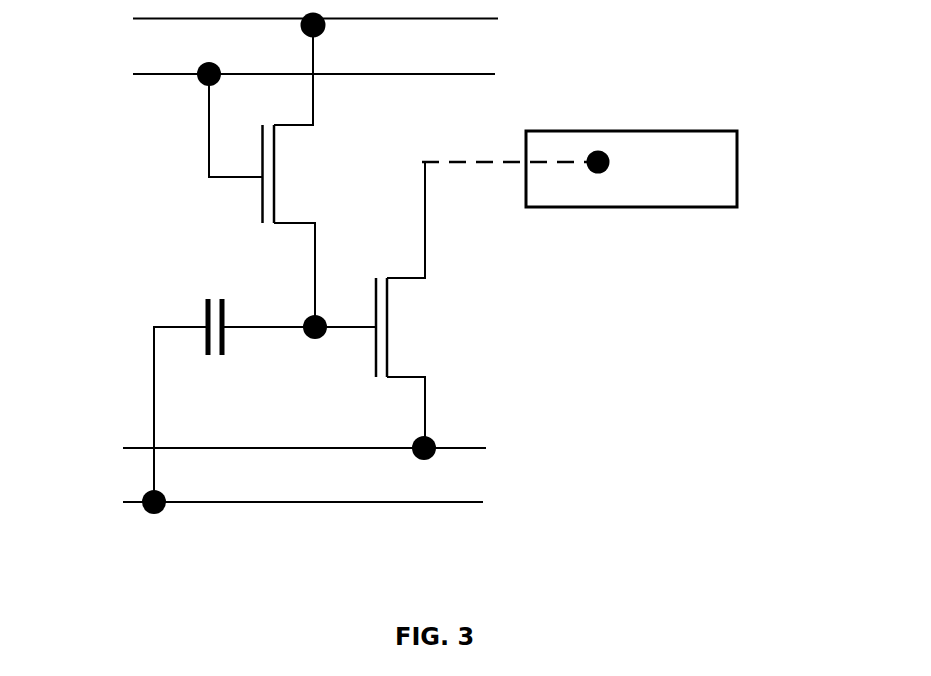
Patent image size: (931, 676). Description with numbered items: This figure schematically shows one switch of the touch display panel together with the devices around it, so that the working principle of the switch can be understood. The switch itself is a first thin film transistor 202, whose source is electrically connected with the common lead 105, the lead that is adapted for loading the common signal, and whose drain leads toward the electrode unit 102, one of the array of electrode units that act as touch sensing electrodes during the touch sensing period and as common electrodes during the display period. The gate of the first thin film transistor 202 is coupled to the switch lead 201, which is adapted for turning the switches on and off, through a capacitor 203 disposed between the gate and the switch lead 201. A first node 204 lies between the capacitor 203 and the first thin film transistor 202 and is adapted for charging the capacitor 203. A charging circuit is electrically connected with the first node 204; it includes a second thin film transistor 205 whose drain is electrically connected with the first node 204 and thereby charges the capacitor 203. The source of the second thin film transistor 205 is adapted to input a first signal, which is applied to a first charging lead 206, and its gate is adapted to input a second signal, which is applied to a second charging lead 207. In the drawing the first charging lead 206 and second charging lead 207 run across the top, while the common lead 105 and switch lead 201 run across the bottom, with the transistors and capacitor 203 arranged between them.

The electrode unit 102 is at (741, 189).
The common lead 105 is at (458, 452).
The switch lead 201 is at (458, 505).
The first thin film transistor 202 is at (388, 363).
The capacitor 203 is at (202, 319).
The first node 204 is at (320, 337).
The second thin film transistor 205 is at (262, 216).
The first charging lead 206 is at (152, 19).
The second charging lead 207 is at (152, 75).